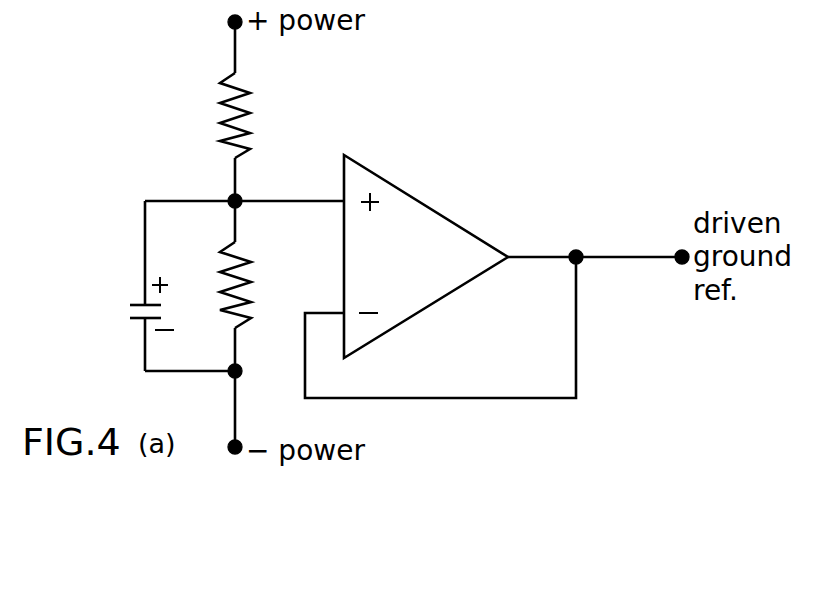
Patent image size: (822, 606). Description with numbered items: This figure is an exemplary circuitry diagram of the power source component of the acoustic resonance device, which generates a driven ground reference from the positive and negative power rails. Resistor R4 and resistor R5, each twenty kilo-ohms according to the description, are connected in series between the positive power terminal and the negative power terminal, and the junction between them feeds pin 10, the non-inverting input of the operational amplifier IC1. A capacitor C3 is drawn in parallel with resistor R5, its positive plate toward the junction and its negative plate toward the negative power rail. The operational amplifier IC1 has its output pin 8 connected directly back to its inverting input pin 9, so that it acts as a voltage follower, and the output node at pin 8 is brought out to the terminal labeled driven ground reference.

The output pin of IC1 8 is at (595, 239).
The inverting input pin of IC1 9 is at (440, 327).
The non-inverting input pin of IC1 10 is at (289, 183).
The resistor R4 is at (257, 115).
The resistor R5 is at (257, 285).
The capacitor C3 is at (161, 286).
The operational amplifier IC1 is at (426, 256).